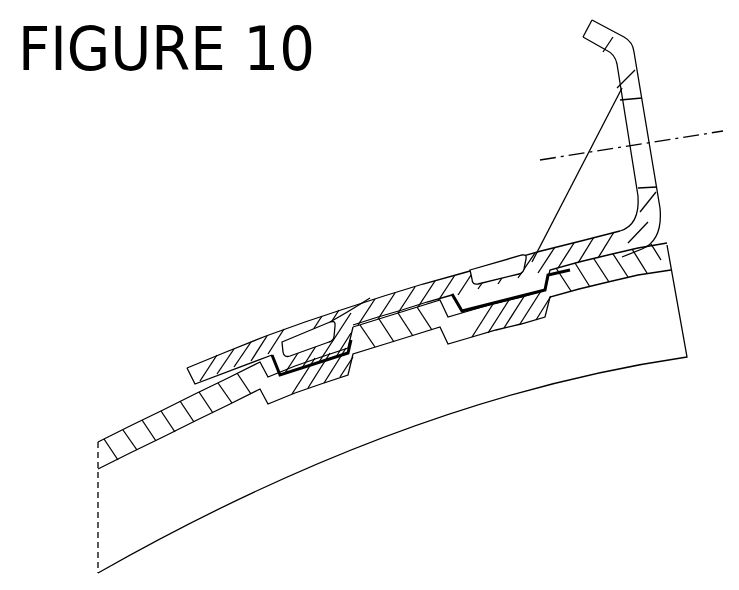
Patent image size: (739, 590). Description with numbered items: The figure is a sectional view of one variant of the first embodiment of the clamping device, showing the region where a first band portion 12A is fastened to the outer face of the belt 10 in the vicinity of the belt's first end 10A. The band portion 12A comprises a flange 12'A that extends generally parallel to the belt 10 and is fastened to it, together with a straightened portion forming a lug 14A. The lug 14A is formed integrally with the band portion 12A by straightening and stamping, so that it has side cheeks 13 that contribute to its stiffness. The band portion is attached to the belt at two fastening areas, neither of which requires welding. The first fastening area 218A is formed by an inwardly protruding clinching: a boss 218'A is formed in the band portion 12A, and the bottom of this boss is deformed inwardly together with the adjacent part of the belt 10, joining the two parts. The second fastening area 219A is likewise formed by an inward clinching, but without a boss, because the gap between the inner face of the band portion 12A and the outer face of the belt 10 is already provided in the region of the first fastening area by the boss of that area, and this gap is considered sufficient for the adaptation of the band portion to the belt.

The belt 10 is at (128, 444).
The first end of the belt 10A is at (636, 272).
The first band portion 12A is at (204, 352).
The flange 12'A is at (403, 294).
The side cheeks 13 is at (606, 132).
The lug 14A is at (632, 58).
The first fastening area 218A is at (290, 313).
The boss 218'A is at (278, 335).
The second fastening area 219A is at (496, 246).